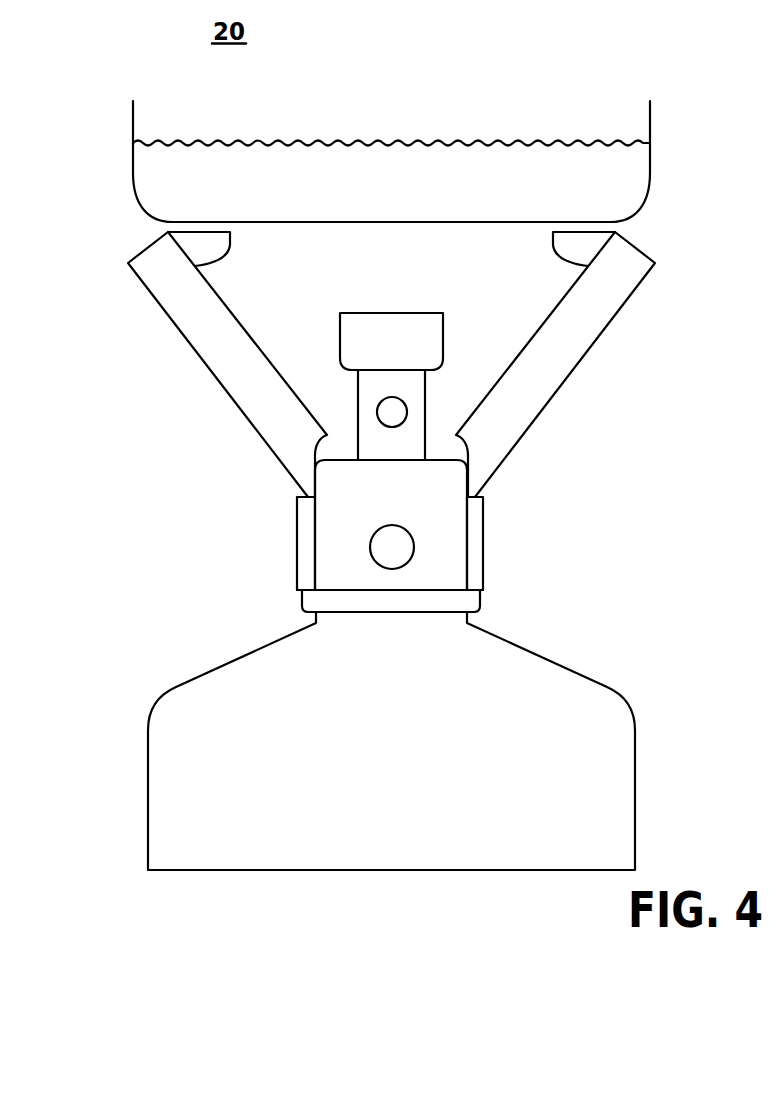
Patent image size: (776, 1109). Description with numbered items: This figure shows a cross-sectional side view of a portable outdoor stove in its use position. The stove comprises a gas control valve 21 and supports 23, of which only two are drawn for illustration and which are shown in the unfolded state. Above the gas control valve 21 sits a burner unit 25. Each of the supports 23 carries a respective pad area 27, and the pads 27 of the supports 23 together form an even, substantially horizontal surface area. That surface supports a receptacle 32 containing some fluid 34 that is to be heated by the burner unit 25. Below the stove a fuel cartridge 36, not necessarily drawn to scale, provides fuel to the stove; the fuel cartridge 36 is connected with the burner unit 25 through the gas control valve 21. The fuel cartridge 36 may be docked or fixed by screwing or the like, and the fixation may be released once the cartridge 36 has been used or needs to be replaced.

The gas control valve 21 is at (485, 528).
The supports 23 is at (205, 366).
The burner unit 25 is at (412, 313).
The pad areas 27 is at (208, 238).
The receptacle 32 is at (652, 129).
The fluid 34 is at (494, 143).
The fuel cartridge 36 is at (547, 683).